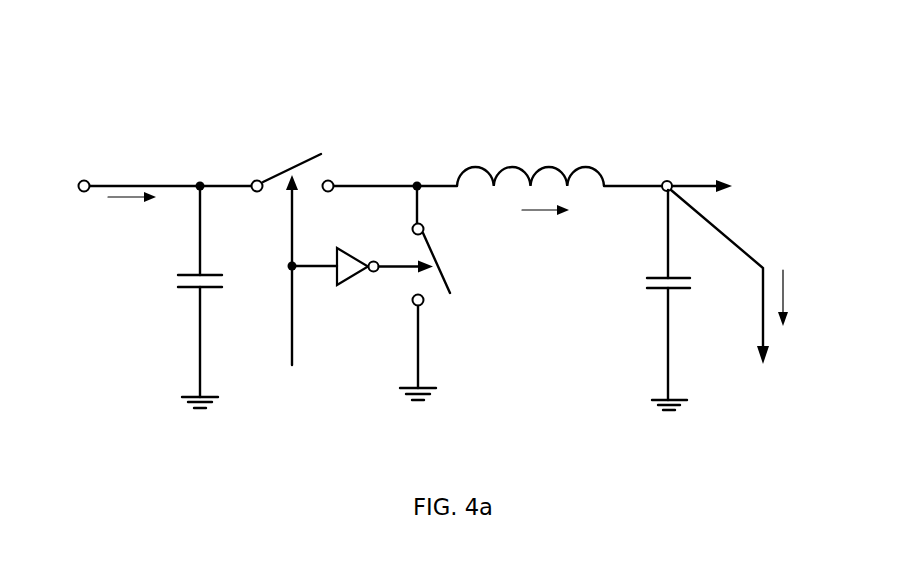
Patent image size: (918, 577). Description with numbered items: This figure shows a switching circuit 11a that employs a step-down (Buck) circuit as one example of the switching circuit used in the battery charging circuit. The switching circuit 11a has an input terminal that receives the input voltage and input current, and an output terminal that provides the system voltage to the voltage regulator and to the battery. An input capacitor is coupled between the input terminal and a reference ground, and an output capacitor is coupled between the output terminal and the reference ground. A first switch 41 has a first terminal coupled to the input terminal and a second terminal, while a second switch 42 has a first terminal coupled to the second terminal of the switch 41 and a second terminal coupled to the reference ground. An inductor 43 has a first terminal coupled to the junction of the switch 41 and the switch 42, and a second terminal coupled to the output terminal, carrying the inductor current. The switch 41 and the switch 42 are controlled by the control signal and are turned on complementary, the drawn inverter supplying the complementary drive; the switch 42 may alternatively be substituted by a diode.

The switching circuit 11a is at (698, 94).
The switch 41 is at (283, 167).
The switch 42 is at (445, 272).
The inductor 43 is at (516, 162).